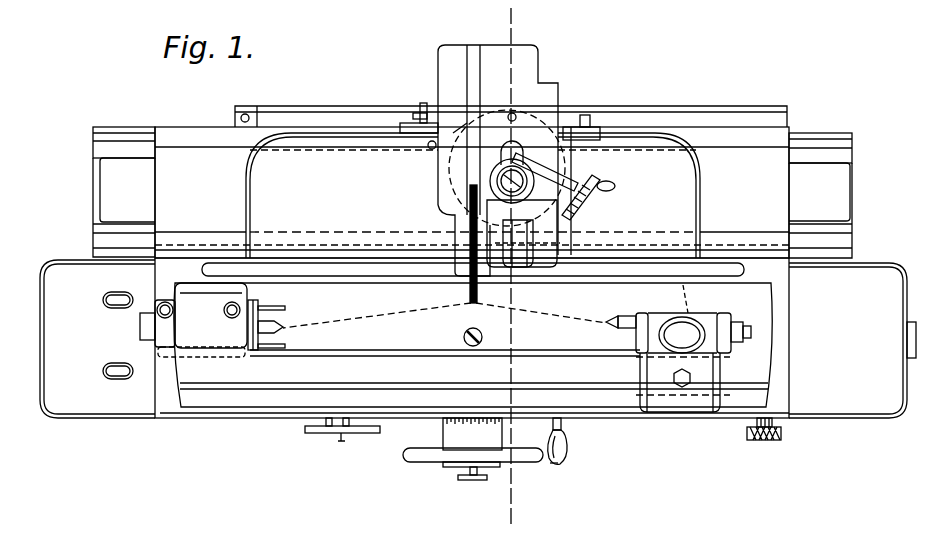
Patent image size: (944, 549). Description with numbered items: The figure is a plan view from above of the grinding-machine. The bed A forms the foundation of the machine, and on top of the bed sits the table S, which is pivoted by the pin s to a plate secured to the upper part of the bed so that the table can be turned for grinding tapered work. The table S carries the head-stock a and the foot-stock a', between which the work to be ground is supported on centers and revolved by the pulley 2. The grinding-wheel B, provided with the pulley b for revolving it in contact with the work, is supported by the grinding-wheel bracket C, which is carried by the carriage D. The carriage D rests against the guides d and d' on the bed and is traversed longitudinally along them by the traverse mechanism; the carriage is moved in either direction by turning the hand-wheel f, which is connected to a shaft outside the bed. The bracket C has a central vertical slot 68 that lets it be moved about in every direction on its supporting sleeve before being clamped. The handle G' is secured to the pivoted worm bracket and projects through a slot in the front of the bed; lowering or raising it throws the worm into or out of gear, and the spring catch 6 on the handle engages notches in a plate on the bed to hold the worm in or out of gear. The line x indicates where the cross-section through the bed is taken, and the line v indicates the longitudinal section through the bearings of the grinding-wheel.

The section line x- x is at (510, 268).
The carriage D is at (472, 182).
The guide d' is at (486, 145).
The guide d is at (487, 208).
The grinding-wheel bracket C is at (507, 160).
The central vertical slot 68 is at (507, 168).
The section line v- v is at (473, 233).
The pulley b is at (527, 251).
The grinding-wheel B is at (467, 293).
The table S is at (473, 345).
The pin s is at (483, 336).
The head-stock a is at (193, 320).
The foot-stock a' is at (678, 348).
The pulley 2 is at (263, 350).
The bed A is at (170, 413).
The hand-wheel f is at (405, 455).
The handle G' is at (570, 441).
The spring catch 6 is at (553, 464).